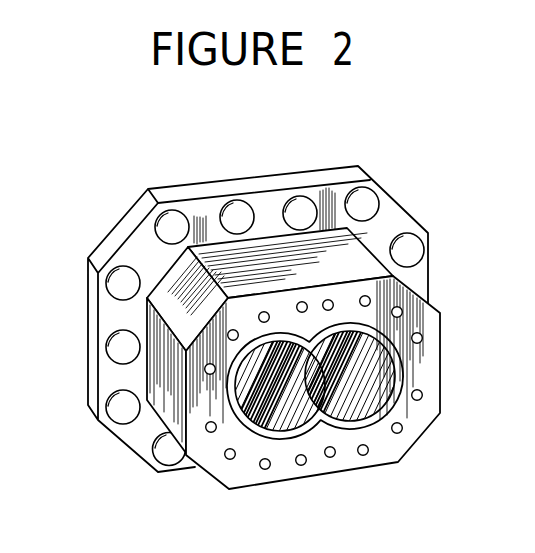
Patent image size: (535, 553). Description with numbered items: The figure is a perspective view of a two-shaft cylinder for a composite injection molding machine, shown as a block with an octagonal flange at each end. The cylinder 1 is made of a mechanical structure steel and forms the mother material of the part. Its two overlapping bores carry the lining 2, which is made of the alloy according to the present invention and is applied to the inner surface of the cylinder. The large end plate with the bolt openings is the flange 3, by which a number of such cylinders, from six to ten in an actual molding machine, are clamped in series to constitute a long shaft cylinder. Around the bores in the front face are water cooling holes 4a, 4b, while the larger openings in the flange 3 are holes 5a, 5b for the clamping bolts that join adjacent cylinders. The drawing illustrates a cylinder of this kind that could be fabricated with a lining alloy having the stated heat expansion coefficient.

The cylinder 1 is at (405, 446).
The lining 2 is at (398, 373).
The flange 3 is at (340, 174).
The water cooling hole 4a is at (263, 471).
The water cooling hole 4b is at (301, 467).
The hole for clamping bolt 5a is at (117, 352).
The hole for clamping bolt 5b is at (120, 415).